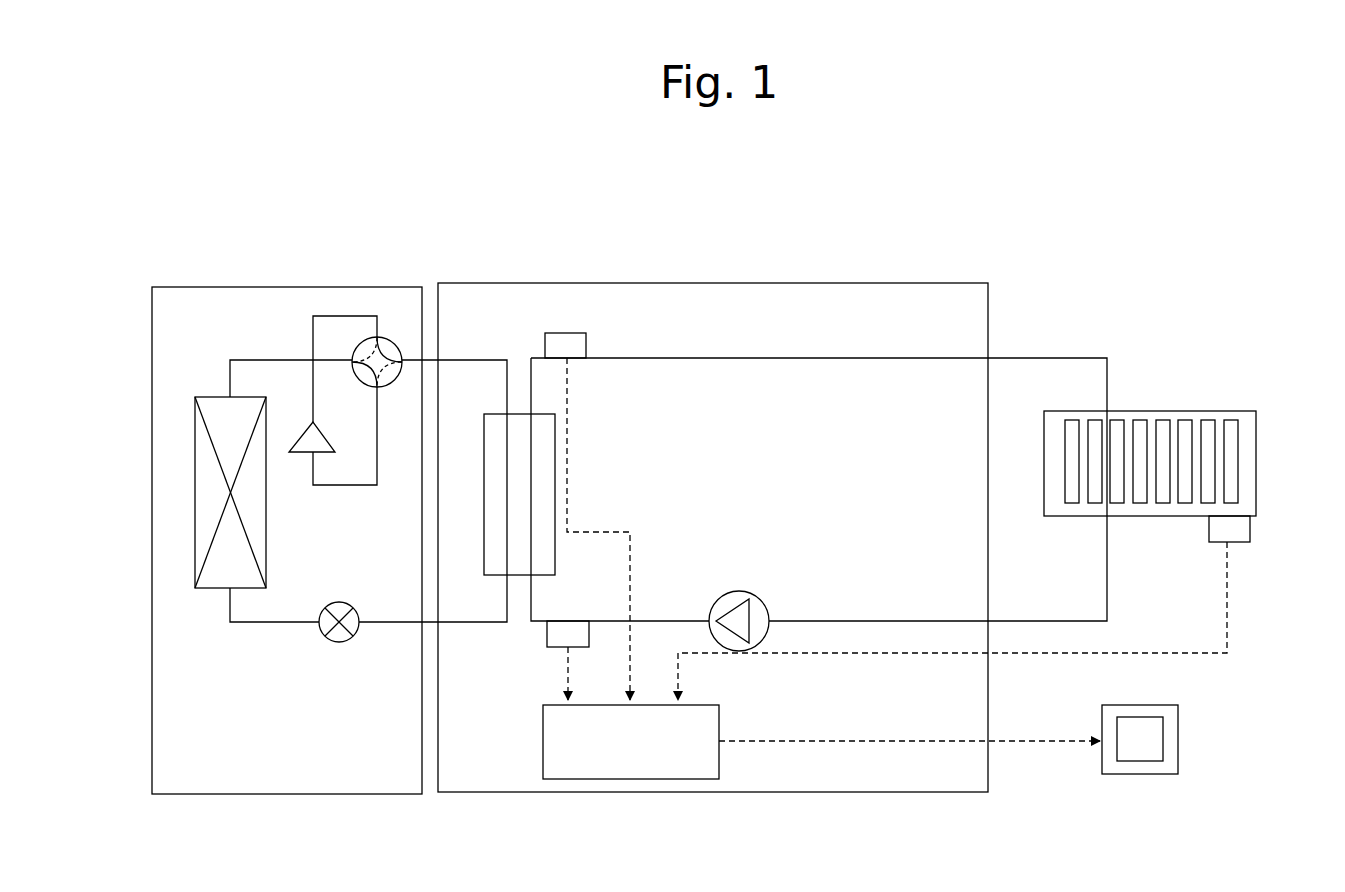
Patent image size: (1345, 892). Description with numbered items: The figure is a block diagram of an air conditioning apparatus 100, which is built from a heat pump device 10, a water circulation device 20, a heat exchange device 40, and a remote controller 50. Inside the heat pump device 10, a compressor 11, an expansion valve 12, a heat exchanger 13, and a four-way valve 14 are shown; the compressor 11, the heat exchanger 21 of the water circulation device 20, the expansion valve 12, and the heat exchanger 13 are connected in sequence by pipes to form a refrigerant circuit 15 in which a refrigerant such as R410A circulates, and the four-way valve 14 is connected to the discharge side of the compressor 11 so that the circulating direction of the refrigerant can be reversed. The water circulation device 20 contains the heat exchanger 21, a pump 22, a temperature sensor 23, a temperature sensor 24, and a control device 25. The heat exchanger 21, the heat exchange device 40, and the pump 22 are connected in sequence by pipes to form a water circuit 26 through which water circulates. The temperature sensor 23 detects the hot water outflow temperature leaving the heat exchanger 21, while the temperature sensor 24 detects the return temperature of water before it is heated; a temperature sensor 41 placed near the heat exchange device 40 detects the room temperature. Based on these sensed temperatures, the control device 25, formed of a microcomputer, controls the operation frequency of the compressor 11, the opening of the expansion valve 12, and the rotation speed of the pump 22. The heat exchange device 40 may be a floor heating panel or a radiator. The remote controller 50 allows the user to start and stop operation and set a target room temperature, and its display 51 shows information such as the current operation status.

The air conditioning apparatus 100 is at (968, 175).
The heat pump device 10 is at (262, 287).
The compressor 11 is at (318, 434).
The expansion valve 12 is at (350, 605).
The heat exchanger 13 is at (268, 556).
The four-way valve 14 is at (390, 382).
The refrigerant circuit 15 is at (255, 360).
The water circulation device 20 is at (705, 283).
The heat exchanger 21 is at (490, 414).
The pump 22 is at (760, 602).
The temperature sensor 23 is at (588, 350).
The temperature sensor 24 is at (545, 647).
The control device 25 is at (719, 720).
The water circuit 26 is at (780, 358).
The heat exchange device 40 is at (1226, 411).
The temperature sensor 41 is at (1252, 534).
The remote controller 50 is at (1178, 750).
The display 51 is at (1163, 725).